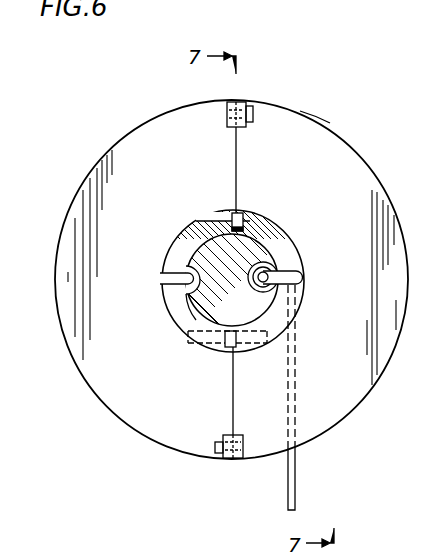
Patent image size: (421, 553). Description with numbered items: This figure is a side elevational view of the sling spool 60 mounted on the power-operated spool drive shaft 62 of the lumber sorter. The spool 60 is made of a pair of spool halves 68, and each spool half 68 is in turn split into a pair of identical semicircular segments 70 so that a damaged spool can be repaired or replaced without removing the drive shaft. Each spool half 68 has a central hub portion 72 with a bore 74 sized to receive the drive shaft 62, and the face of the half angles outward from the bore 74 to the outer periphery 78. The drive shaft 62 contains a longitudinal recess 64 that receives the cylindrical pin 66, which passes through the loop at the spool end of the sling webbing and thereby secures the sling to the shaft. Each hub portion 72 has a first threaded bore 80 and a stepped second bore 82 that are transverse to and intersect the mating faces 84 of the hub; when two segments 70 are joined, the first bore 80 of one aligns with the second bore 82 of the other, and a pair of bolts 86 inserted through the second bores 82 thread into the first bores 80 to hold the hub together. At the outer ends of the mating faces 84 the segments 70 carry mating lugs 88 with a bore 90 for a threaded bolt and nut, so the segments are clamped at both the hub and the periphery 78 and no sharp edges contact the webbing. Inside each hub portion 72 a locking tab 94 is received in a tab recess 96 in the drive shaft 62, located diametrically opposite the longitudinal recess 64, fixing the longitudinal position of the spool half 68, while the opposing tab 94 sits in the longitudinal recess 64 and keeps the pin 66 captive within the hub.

The sling spool 60 is at (103, 424).
The spool drive shaft 62 is at (197, 248).
The longitudinal recess 64 is at (270, 262).
The cylindrical pin 66 is at (278, 272).
The spool half 68 is at (316, 120).
The semicircular segment 70 is at (133, 152).
The central hub portion 72 is at (168, 311).
The bore 74 is at (183, 256).
The outer periphery 78 is at (348, 410).
The first threaded bore 80 is at (205, 212).
The second bore 82 is at (213, 345).
The mating face 84 is at (240, 350).
The bolt 86 is at (245, 214).
The mating lug 88 is at (246, 103).
The bore 90 is at (248, 125).
The locking tab 94 is at (172, 279).
The tab recess 96 is at (197, 320).